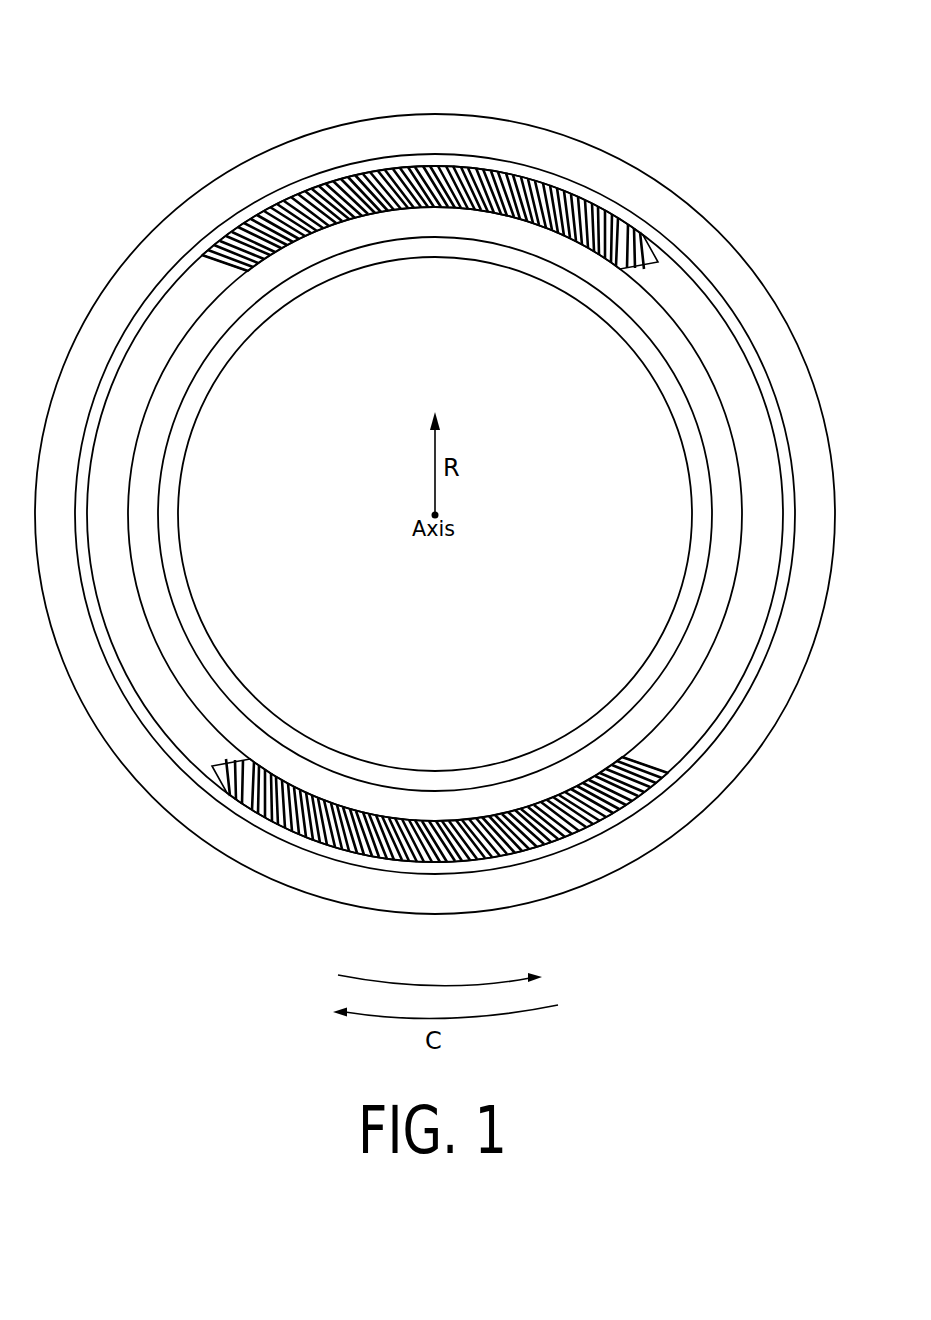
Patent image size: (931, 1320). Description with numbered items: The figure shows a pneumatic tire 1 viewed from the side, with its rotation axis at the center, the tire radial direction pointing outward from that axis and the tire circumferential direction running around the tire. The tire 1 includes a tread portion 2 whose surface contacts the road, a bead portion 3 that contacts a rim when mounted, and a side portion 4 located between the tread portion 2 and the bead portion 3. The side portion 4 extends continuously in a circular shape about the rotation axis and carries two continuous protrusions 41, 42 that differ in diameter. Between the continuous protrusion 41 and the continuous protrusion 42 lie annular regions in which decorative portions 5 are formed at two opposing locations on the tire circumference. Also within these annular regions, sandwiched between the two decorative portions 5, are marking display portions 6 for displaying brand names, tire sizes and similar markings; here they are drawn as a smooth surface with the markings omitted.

The tire 1 is at (192, 125).
The tread portion 2 is at (498, 102).
The bead portion 3 is at (441, 265).
The side portion 4 is at (434, 145).
The continuous protrusion 41 is at (210, 305).
The continuous protrusion 42 is at (192, 262).
The decorative portion 5 is at (603, 188).
The marking display portion 6 is at (140, 735).